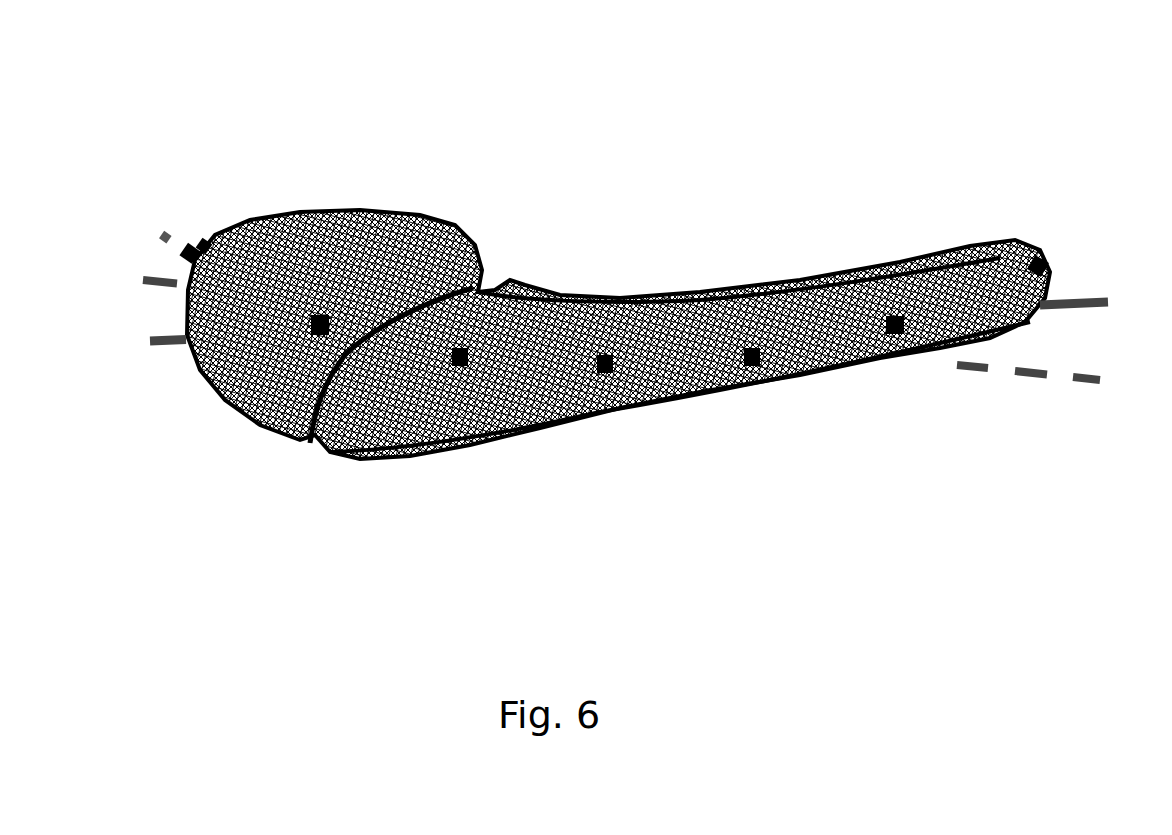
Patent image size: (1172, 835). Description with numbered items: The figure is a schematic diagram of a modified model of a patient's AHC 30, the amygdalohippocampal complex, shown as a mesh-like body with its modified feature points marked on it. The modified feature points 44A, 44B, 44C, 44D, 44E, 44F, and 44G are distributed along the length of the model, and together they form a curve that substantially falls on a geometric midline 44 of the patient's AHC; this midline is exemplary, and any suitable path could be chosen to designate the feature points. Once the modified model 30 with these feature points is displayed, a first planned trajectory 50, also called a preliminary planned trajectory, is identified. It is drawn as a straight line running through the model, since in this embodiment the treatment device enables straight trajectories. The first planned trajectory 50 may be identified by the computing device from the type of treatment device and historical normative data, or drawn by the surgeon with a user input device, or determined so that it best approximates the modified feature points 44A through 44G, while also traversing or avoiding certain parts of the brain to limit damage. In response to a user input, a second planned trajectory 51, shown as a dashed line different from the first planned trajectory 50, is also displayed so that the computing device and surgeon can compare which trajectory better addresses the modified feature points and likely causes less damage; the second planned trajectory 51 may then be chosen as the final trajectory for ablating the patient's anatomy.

The modified model of the patient's AHC 30 is at (643, 157).
The geometric midline 44 is at (170, 232).
The modified feature point 44A is at (205, 245).
The modified feature point 44B is at (320, 330).
The modified feature point 44C is at (460, 362).
The modified feature point 44D is at (604, 372).
The modified feature point 44E is at (752, 365).
The modified feature point 44F is at (893, 335).
The modified feature point 44G is at (1040, 265).
The first planned trajectory 50 is at (1095, 291).
The second planned trajectory 51 is at (1043, 382).